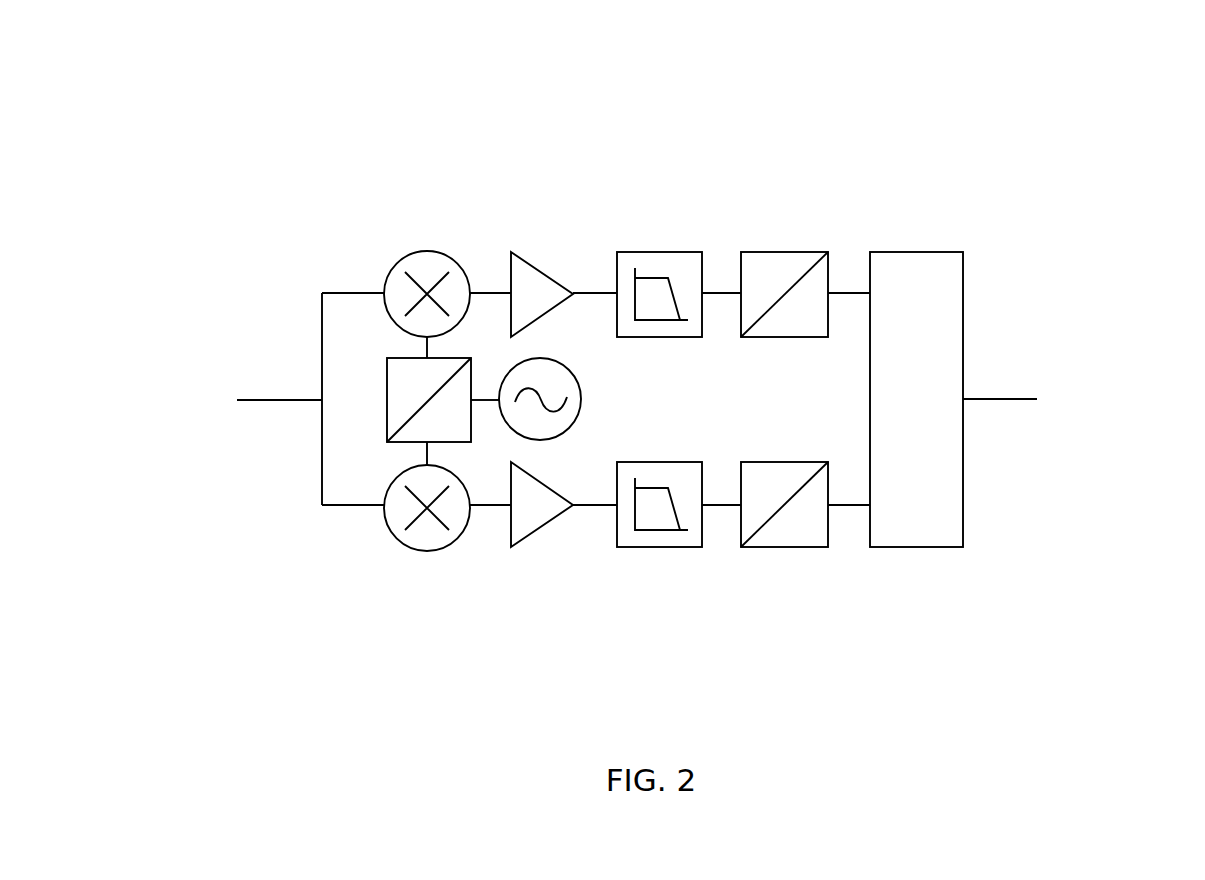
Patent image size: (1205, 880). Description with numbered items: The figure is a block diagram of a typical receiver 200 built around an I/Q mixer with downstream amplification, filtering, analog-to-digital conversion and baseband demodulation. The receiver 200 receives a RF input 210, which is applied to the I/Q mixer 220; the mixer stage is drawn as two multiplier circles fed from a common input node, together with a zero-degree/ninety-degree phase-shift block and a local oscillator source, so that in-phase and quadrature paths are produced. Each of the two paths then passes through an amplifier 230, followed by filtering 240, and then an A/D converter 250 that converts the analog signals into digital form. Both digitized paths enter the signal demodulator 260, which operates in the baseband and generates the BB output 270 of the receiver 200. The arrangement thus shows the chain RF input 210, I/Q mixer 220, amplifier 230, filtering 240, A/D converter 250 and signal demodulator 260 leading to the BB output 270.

The receiver 200 is at (228, 27).
The RF input 210 is at (222, 403).
The I/Q mixer 220 is at (427, 252).
The amplifier 230 is at (533, 258).
The filtering 240 is at (655, 252).
The A/D converter 250 is at (772, 252).
The signal demodulator 260 is at (916, 399).
The BB output 270 is at (1075, 396).